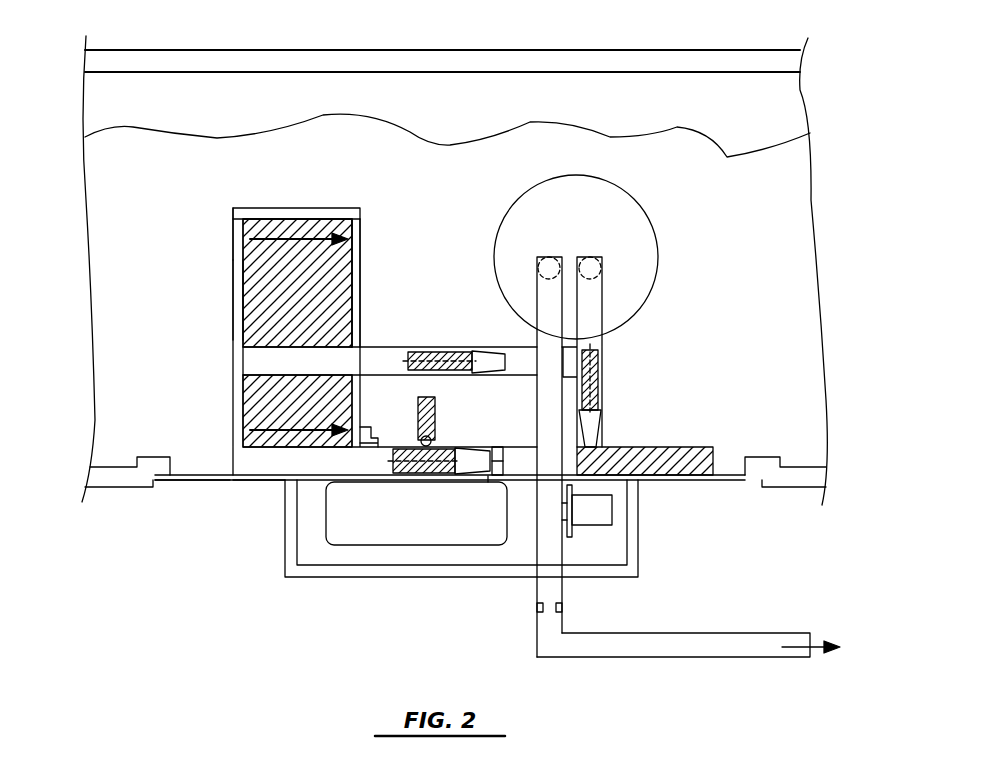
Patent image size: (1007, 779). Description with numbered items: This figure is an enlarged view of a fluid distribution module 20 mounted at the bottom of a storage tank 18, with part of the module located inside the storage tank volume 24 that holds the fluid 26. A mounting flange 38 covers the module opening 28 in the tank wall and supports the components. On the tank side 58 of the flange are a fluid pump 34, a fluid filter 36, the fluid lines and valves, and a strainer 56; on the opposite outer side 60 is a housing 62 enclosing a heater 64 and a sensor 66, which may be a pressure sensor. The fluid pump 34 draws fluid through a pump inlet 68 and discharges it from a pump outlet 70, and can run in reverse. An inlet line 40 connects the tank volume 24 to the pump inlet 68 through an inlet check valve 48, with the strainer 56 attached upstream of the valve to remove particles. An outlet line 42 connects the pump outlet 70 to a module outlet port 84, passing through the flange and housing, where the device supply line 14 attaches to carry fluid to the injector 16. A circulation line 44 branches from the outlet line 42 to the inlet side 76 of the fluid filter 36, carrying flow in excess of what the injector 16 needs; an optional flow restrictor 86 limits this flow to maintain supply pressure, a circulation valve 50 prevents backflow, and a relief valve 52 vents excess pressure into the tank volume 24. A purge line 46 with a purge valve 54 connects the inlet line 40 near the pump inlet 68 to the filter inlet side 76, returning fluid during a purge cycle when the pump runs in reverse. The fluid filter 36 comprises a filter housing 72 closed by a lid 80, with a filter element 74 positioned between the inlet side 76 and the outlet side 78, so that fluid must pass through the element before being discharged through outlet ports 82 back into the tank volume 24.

The device supply line 14 is at (712, 648).
The injector 16 is at (826, 648).
The storage tank 18 is at (142, 58).
The fluid distribution module 20 is at (636, 155).
The storage tank volume 24 is at (118, 155).
The fluid 26 is at (790, 212).
The module opening 28 is at (748, 462).
The fluid pump 34 is at (640, 212).
The fluid filter 36 is at (345, 210).
The mounting flange 38 is at (258, 484).
The inlet line 40 is at (590, 300).
The outlet line 42 is at (548, 298).
The circulation line 44 is at (514, 464).
The purge line 46 is at (375, 357).
The inlet check valve 48 is at (595, 430).
The circulation valve 50 is at (478, 462).
The relief valve 52 is at (432, 441).
The purge valve 54 is at (478, 346).
The strainer 56 is at (672, 450).
The tank side 58 is at (190, 475).
The outer side 60 is at (196, 482).
The housing 62 is at (632, 553).
The heater 64 is at (366, 530).
The sensor 66 is at (598, 512).
The pump inlet 68 is at (590, 272).
The pump outlet 70 is at (548, 270).
The filter housing 72 is at (235, 225).
The filter element 74 is at (294, 218).
The inlet side 76 is at (238, 280).
The outlet side 78 is at (356, 242).
The lid 80 is at (258, 210).
The outlet ports 82 is at (372, 438).
The module outlet port 84 is at (556, 608).
The flow restrictor 86 is at (492, 480).